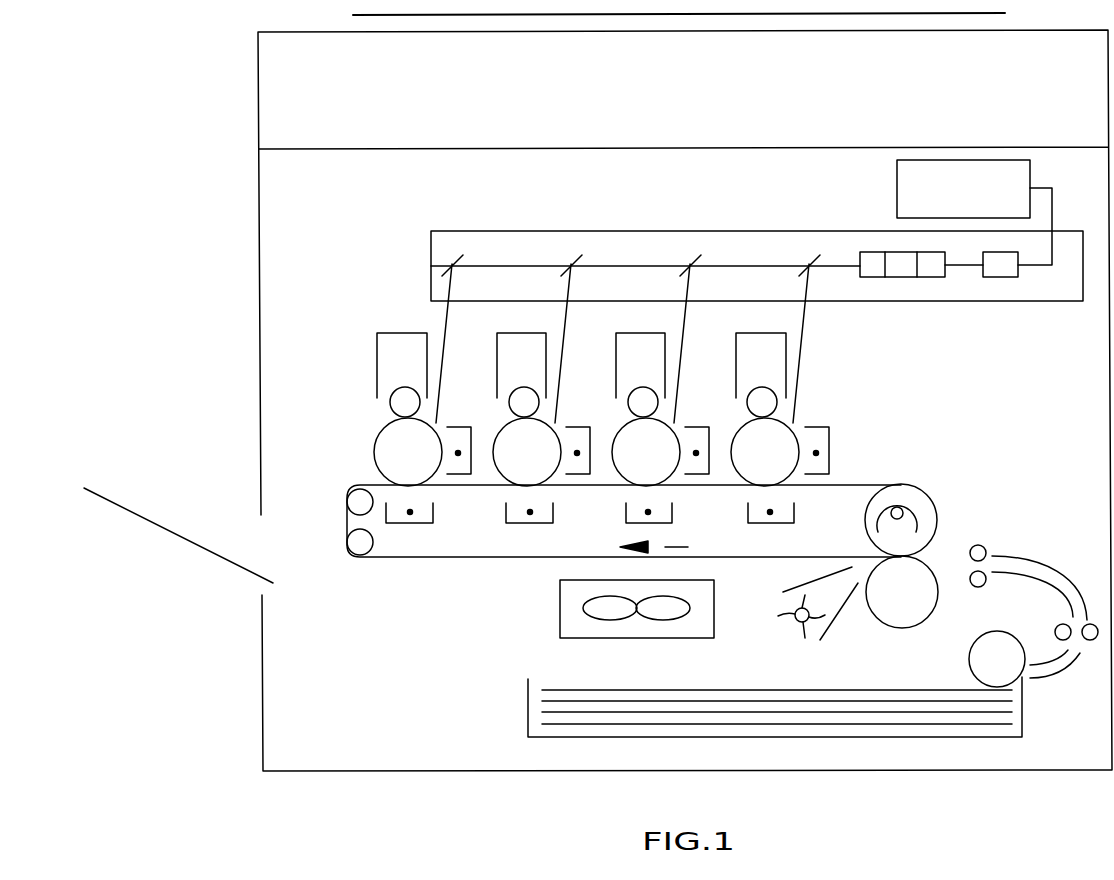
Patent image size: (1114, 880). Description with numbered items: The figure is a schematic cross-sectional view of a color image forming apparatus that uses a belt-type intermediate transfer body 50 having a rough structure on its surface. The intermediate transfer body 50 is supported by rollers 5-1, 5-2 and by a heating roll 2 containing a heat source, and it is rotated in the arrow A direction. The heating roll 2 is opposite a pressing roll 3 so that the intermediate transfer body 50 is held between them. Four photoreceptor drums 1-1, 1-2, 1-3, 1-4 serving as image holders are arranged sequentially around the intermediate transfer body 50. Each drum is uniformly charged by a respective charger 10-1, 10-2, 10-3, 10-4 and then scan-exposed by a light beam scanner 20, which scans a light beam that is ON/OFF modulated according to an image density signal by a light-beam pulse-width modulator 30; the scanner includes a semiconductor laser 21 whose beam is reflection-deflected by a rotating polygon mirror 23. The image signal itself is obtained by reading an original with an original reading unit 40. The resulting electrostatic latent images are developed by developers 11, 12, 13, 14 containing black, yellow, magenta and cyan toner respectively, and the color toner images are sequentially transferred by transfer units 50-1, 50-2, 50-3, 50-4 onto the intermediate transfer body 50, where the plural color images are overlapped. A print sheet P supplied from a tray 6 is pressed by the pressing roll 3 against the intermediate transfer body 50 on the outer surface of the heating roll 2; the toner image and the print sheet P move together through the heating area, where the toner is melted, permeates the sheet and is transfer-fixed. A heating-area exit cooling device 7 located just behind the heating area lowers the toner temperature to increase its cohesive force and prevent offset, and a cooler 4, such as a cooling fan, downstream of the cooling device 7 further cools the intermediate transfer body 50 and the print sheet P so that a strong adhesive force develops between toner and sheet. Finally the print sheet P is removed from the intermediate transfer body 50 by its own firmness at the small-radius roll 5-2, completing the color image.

The original reading unit 40 is at (1014, 93).
The light-beam pulse-width modulator 30 is at (950, 205).
The light beam scanner 20 is at (750, 231).
The polygon mirror 23 is at (902, 277).
The semiconductor laser 21 is at (1001, 277).
The developer 11 is at (400, 333).
The developer 12 is at (515, 333).
The developer 13 is at (635, 333).
The developer 14 is at (755, 333).
The photoreceptor drum 1-1 is at (430, 464).
The photoreceptor drum 1-2 is at (549, 464).
The photoreceptor drum 1-3 is at (668, 464).
The photoreceptor drum 1-4 is at (787, 464).
The charger 10-1 is at (477, 440).
The charger 10-2 is at (596, 440).
The charger 10-3 is at (715, 440).
The charger 10-4 is at (834, 440).
The intermediate transfer body 50 is at (527, 558).
The transfer unit 50-1 is at (386, 523).
The transfer unit 50-2 is at (507, 523).
The transfer unit 50-3 is at (672, 506).
The transfer unit 50-4 is at (794, 506).
The roller 5-1 is at (350, 497).
The roll 5-2 is at (354, 540).
The heating roll 2 is at (921, 527).
The pressing roll 3 is at (917, 598).
The cooler 4 is at (560, 613).
The tray 6 is at (527, 707).
The heating-area exit cooling device 7 is at (797, 624).
The arrow direction A is at (665, 547).
The print sheet P is at (858, 713).